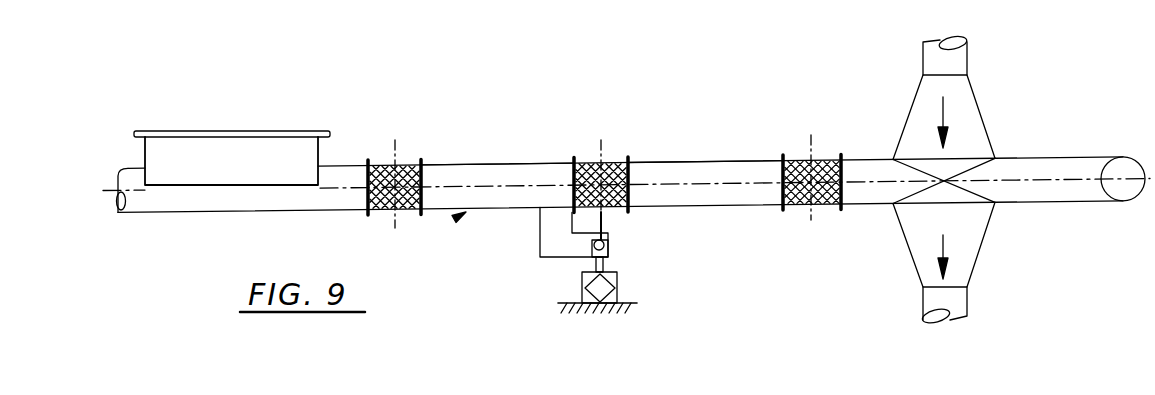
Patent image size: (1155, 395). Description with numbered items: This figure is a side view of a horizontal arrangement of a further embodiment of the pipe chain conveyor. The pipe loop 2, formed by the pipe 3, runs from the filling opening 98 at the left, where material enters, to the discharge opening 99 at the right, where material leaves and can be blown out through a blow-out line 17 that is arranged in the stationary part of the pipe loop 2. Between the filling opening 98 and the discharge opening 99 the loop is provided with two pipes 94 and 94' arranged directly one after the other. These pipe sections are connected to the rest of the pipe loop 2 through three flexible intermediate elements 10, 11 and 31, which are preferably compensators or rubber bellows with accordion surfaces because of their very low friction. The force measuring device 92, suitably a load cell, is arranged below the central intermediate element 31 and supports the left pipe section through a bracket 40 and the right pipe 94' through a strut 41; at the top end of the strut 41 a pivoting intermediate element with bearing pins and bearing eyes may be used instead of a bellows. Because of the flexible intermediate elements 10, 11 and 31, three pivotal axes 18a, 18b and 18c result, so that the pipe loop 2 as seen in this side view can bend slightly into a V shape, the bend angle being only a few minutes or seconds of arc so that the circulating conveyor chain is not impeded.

The pipe loop 2 is at (458, 218).
The pipe 3 is at (118, 195).
The flexible intermediate element 10 is at (384, 160).
The flexible intermediate element 11 is at (799, 157).
The blow-out line 17 is at (965, 99).
The pivotal axis 18a is at (405, 163).
The pivotal axis 18b is at (611, 158).
The pivotal axis 18c is at (822, 158).
The central intermediate element 31 is at (589, 158).
The bracket 40 is at (552, 236).
The strut 41 is at (603, 221).
The force measuring device 92 is at (582, 278).
The pipe 94 is at (497, 135).
The pipe 94' is at (705, 132).
The filling opening 98 is at (262, 146).
The discharge opening 99 is at (917, 225).